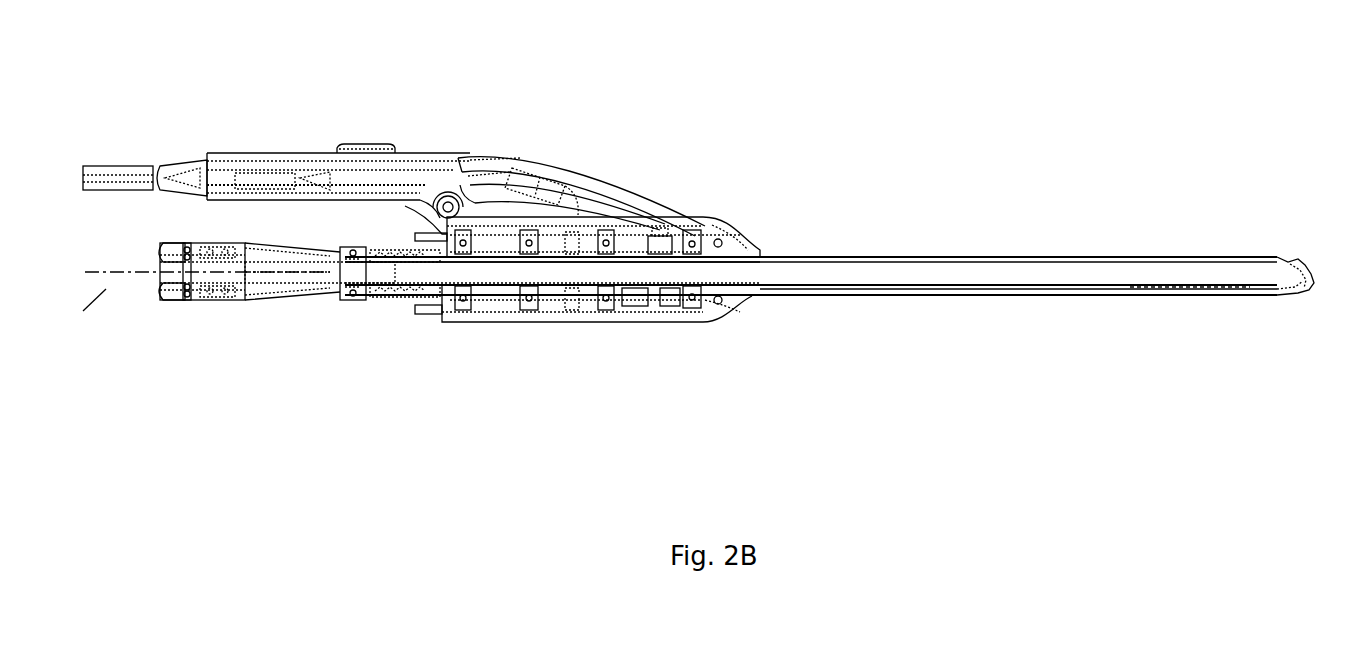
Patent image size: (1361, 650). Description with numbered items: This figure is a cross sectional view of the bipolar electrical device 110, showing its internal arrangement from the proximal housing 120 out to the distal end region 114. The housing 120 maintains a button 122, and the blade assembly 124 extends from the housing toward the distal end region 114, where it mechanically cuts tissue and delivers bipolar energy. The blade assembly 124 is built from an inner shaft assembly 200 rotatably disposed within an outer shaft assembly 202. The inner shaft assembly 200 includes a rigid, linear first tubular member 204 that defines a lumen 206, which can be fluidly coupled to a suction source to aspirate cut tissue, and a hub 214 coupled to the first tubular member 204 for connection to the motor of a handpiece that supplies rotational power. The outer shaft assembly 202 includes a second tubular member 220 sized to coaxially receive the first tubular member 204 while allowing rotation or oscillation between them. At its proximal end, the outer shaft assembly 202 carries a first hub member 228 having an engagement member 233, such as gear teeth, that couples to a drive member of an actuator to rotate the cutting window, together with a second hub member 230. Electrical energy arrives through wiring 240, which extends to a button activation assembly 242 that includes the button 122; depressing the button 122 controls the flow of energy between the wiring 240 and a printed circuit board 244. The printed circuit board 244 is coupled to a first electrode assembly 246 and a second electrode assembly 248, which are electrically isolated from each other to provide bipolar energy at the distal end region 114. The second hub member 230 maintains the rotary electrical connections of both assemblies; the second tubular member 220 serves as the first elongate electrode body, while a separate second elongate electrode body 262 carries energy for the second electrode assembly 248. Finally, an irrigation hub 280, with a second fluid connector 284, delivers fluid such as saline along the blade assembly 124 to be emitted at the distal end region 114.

The bipolar electrical device 110 is at (1112, 16).
The distal end region 114 is at (1306, 245).
The housing 120 is at (570, 170).
The button 122 is at (354, 148).
The blade assembly 124 is at (1058, 316).
The inner shaft assembly 200 is at (244, 306).
The outer shaft assembly 202 is at (774, 290).
The first tubular member 204 is at (325, 272).
The lumen 206 is at (946, 270).
The hub 214 is at (192, 300).
The second tubular member 220 is at (432, 262).
The first hub member 228 is at (412, 290).
The second hub member 230 is at (660, 243).
The engagement member 233 is at (382, 293).
The wiring 240 is at (465, 195).
The button activation assembly 242 is at (338, 167).
The printed circuit board 244 is at (618, 218).
The first electrode assembly 246 is at (636, 312).
The second electrode assembly 248 is at (692, 312).
The second elongate electrode body 262 is at (894, 294).
The irrigation hub 280 is at (482, 316).
The second fluid connector 284 is at (556, 195).